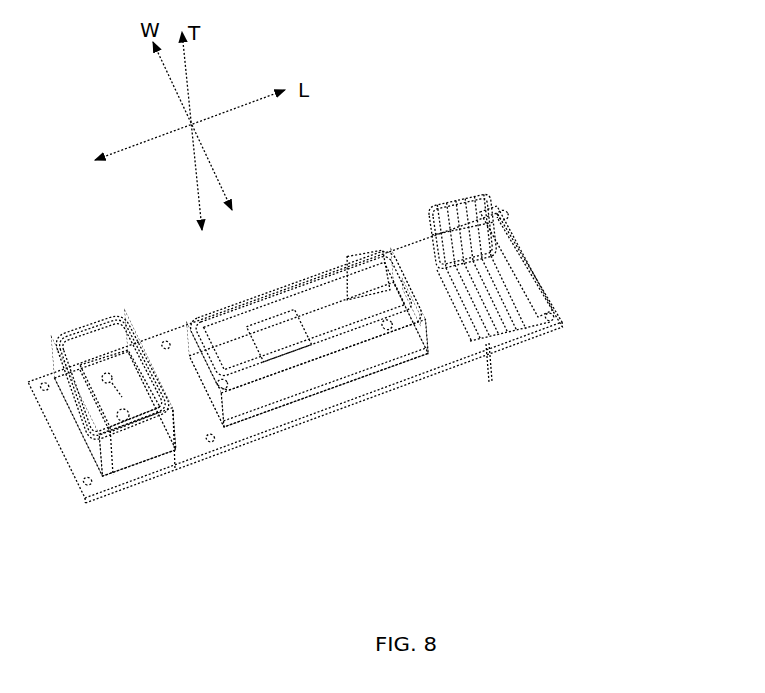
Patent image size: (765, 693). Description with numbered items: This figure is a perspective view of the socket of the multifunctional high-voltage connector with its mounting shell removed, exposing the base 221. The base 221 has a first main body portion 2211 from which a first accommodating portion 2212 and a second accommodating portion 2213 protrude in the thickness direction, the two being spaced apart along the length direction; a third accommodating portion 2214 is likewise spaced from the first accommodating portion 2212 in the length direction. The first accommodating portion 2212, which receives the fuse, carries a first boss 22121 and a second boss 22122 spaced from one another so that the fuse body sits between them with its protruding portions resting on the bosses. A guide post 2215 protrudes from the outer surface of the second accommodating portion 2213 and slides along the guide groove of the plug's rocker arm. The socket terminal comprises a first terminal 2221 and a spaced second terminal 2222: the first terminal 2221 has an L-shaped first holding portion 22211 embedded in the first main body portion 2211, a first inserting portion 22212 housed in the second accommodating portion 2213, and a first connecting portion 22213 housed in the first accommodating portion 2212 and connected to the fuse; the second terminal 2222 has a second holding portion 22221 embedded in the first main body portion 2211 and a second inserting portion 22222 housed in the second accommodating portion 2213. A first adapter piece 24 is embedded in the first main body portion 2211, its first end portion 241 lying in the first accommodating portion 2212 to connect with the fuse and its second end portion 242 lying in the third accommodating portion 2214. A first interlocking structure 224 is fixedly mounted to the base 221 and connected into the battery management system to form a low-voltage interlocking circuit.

The first adapter piece 24 is at (183, 268).
The first end portion 241 is at (225, 332).
The second end portion 242 is at (100, 325).
The base 221 is at (517, 477).
The first main body portion 2211 is at (340, 378).
The first accommodating portion 2212 is at (263, 395).
The second accommodating portion 2213 is at (518, 300).
The third accommodating portion 2214 is at (153, 445).
The guide post 2215 is at (420, 292).
The first boss 22121 is at (290, 288).
The second boss 22122 is at (253, 278).
The first interlocking structure 224 is at (553, 337).
The first terminal 2221 is at (337, 133).
The first holding portion 22211 is at (423, 253).
The first inserting portion 22212 is at (493, 150).
The first connecting portion 22213 is at (338, 262).
The second terminal 2222 is at (615, 173).
The second holding portion 22221 is at (508, 218).
The second inserting portion 22222 is at (483, 197).